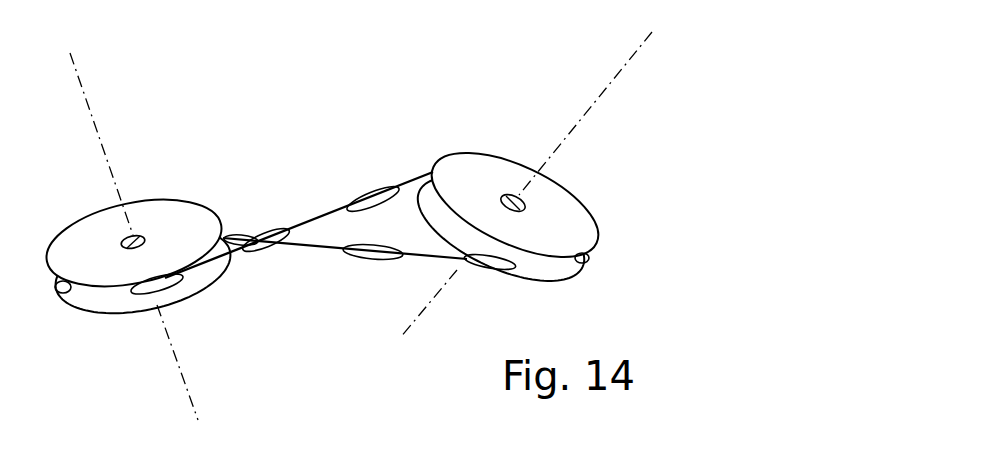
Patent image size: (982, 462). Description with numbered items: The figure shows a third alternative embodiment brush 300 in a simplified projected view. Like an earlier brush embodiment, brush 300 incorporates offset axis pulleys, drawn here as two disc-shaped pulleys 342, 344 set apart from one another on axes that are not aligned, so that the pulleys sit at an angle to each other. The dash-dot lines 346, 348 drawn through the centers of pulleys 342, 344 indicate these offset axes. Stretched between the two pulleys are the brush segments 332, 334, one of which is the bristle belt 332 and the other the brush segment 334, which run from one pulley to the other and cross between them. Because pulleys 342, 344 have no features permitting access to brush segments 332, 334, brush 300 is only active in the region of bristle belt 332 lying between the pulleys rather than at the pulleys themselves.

The brush 300 is at (497, 54).
The bristle belt 332 is at (318, 250).
The brush segment 334 is at (362, 194).
The pulley 342 is at (172, 210).
The pulley 344 is at (563, 205).
The first wheel axis 346 is at (95, 122).
The second wheel axis 348 is at (595, 103).